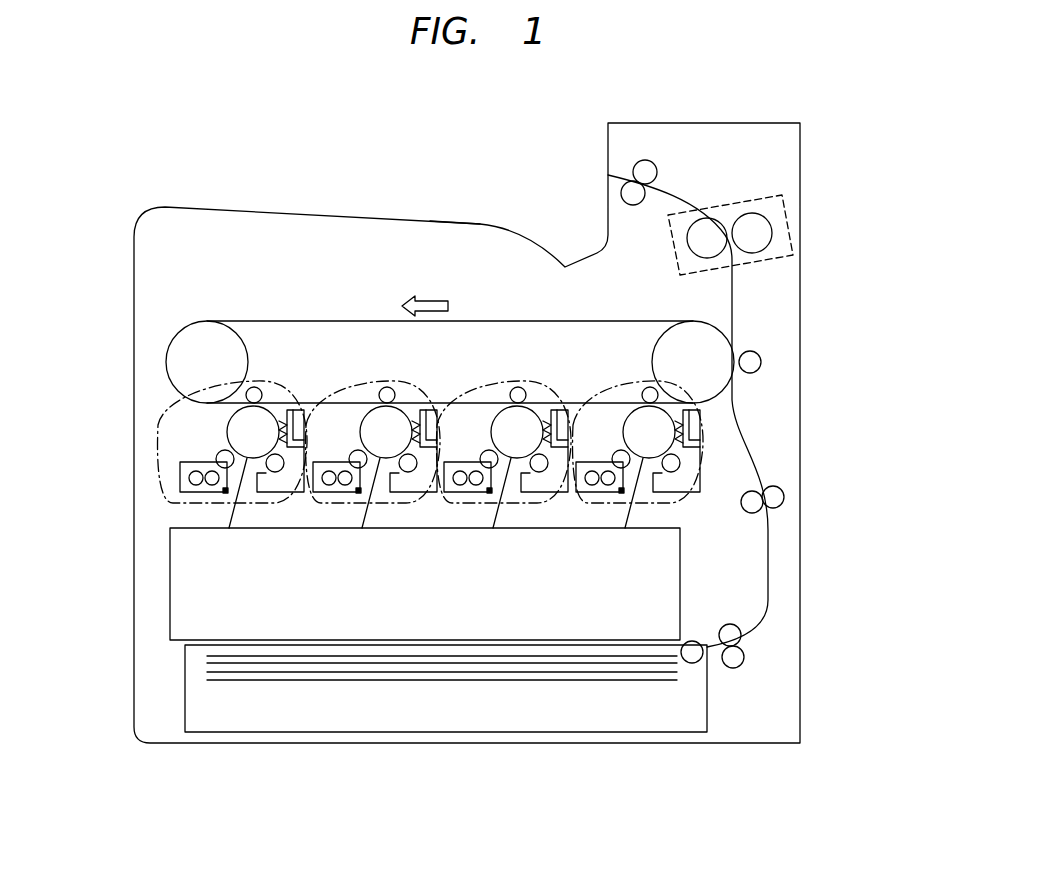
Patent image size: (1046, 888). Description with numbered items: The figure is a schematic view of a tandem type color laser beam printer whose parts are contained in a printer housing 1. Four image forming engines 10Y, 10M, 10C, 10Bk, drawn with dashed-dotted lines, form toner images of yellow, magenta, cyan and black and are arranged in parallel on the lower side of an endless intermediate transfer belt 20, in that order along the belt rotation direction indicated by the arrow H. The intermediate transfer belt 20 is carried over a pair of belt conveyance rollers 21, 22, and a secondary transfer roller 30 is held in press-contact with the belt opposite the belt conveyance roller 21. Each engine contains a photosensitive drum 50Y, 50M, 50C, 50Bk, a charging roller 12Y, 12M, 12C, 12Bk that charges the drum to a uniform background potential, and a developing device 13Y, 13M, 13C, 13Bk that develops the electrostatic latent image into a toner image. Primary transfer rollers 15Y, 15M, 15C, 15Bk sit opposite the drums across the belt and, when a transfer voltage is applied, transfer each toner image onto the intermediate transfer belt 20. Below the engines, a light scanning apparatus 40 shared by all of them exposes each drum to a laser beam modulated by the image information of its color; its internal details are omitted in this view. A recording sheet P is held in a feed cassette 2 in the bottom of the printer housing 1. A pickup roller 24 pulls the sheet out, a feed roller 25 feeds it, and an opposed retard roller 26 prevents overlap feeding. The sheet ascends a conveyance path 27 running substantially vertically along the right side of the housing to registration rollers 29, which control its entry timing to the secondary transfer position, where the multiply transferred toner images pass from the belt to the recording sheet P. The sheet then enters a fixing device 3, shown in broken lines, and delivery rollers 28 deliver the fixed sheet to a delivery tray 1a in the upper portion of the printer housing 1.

The printer housing 1 is at (148, 419).
The delivery tray 1a is at (515, 230).
The feed cassette 2 is at (708, 712).
The fixing device 3 is at (782, 203).
The image forming engine 10Y is at (189, 373).
The image forming engine 10M is at (373, 423).
The image forming engine 10C is at (519, 386).
The image forming engine 10Bk is at (712, 362).
The charging roller 12Y is at (276, 472).
The charging roller 12M is at (408, 472).
The charging roller 12C is at (538, 472).
The charging roller 12Bk is at (680, 463).
The developing device 13Y is at (178, 470).
The developing device 13M is at (332, 462).
The developing device 13C is at (463, 460).
The developing device 13Bk is at (598, 462).
The primary transfer roller 15Y is at (268, 387).
The primary transfer roller 15M is at (386, 388).
The primary transfer roller 15C is at (517, 388).
The primary transfer roller 15Bk is at (650, 390).
The intermediate transfer belt 20 is at (293, 320).
The belt conveyance roller 21 is at (723, 343).
The belt conveyance roller 22 is at (203, 333).
The pickup roller 24 is at (686, 663).
The feed roller 25 is at (741, 635).
The retard roller 26 is at (744, 658).
The conveyance path 27 is at (732, 292).
The delivery rollers 28 is at (648, 160).
The registration rollers 29 is at (784, 497).
The secondary transfer roller 30 is at (762, 360).
The light scanning apparatus 40 is at (683, 572).
The photosensitive drum 50Y is at (233, 430).
The photosensitive drum 50M is at (396, 418).
The photosensitive drum 50C is at (505, 413).
The photosensitive drum 50Bk is at (668, 430).
The arrow H is at (425, 293).
The recording sheet P is at (523, 680).